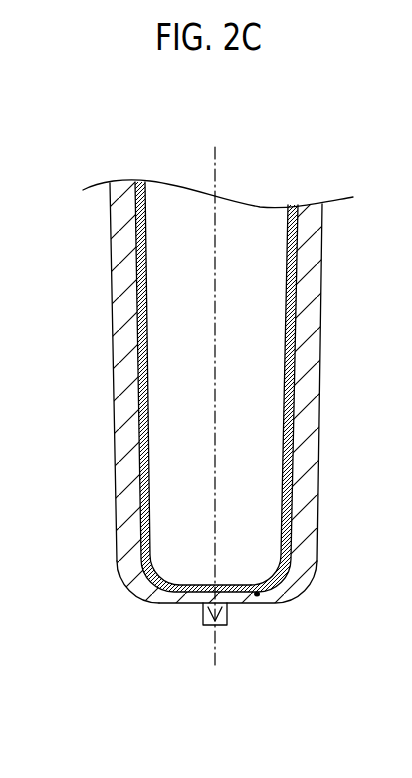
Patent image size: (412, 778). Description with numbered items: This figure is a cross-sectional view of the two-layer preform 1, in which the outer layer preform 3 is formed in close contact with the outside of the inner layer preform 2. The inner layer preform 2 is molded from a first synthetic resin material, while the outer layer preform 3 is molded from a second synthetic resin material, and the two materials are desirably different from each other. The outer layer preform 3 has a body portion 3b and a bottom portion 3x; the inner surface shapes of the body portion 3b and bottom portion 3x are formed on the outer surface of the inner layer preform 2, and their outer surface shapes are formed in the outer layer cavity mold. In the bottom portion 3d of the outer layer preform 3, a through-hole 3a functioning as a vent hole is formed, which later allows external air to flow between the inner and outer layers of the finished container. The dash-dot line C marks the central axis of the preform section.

The preform 1 is at (241, 387).
The inner layer preform 2 is at (319, 288).
The outer layer preform 3 is at (243, 420).
The through-hole 3a is at (258, 597).
The body portion 3b is at (298, 445).
The bottom portion 3d is at (277, 600).
The bottom portion 3x is at (148, 598).
The center axis C is at (216, 170).